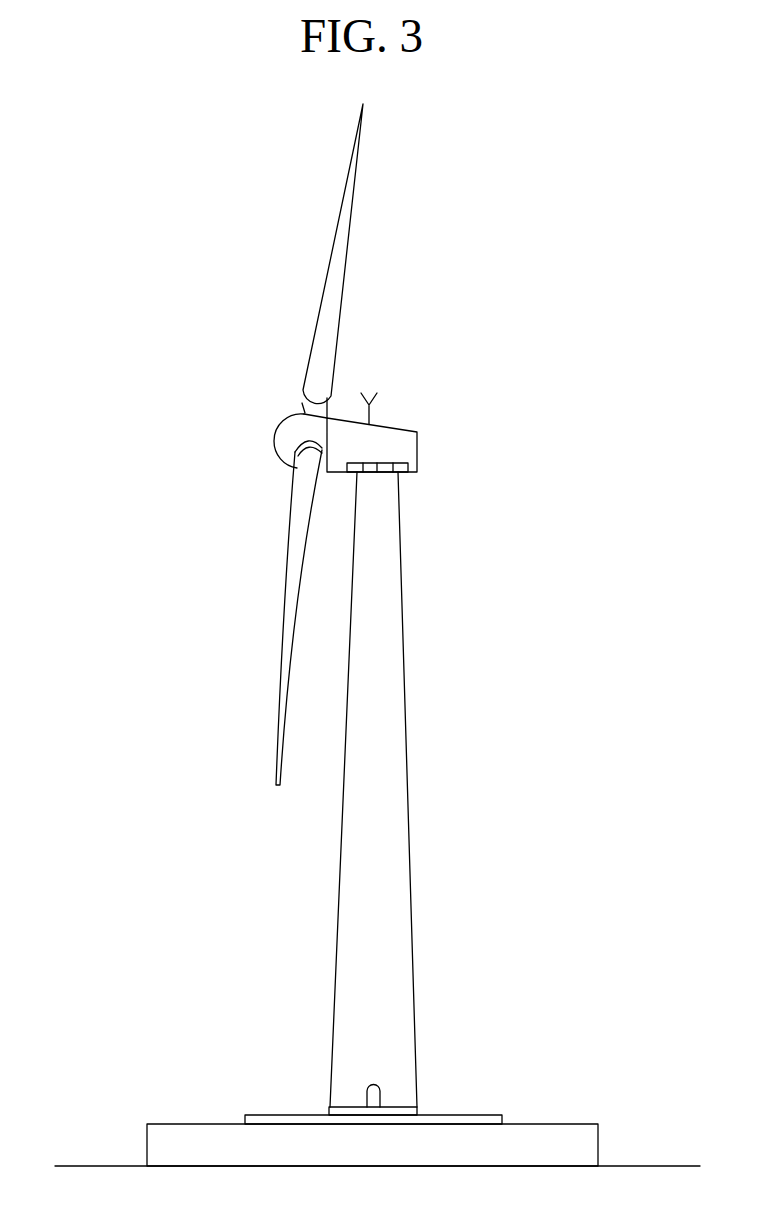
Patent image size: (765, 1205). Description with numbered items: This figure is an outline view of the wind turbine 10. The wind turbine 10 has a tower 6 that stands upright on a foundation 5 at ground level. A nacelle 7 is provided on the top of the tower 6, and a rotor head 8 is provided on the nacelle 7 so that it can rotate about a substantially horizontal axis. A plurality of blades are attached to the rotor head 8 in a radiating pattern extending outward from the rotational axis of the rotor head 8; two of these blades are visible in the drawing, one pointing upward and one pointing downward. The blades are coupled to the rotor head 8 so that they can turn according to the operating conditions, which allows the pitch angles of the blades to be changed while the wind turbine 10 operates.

The foundation 5 is at (562, 1124).
The tower 6 is at (405, 650).
The nacelle 7 is at (387, 425).
The rotor head 8 is at (274, 441).
The wind turbine 10 is at (522, 380).